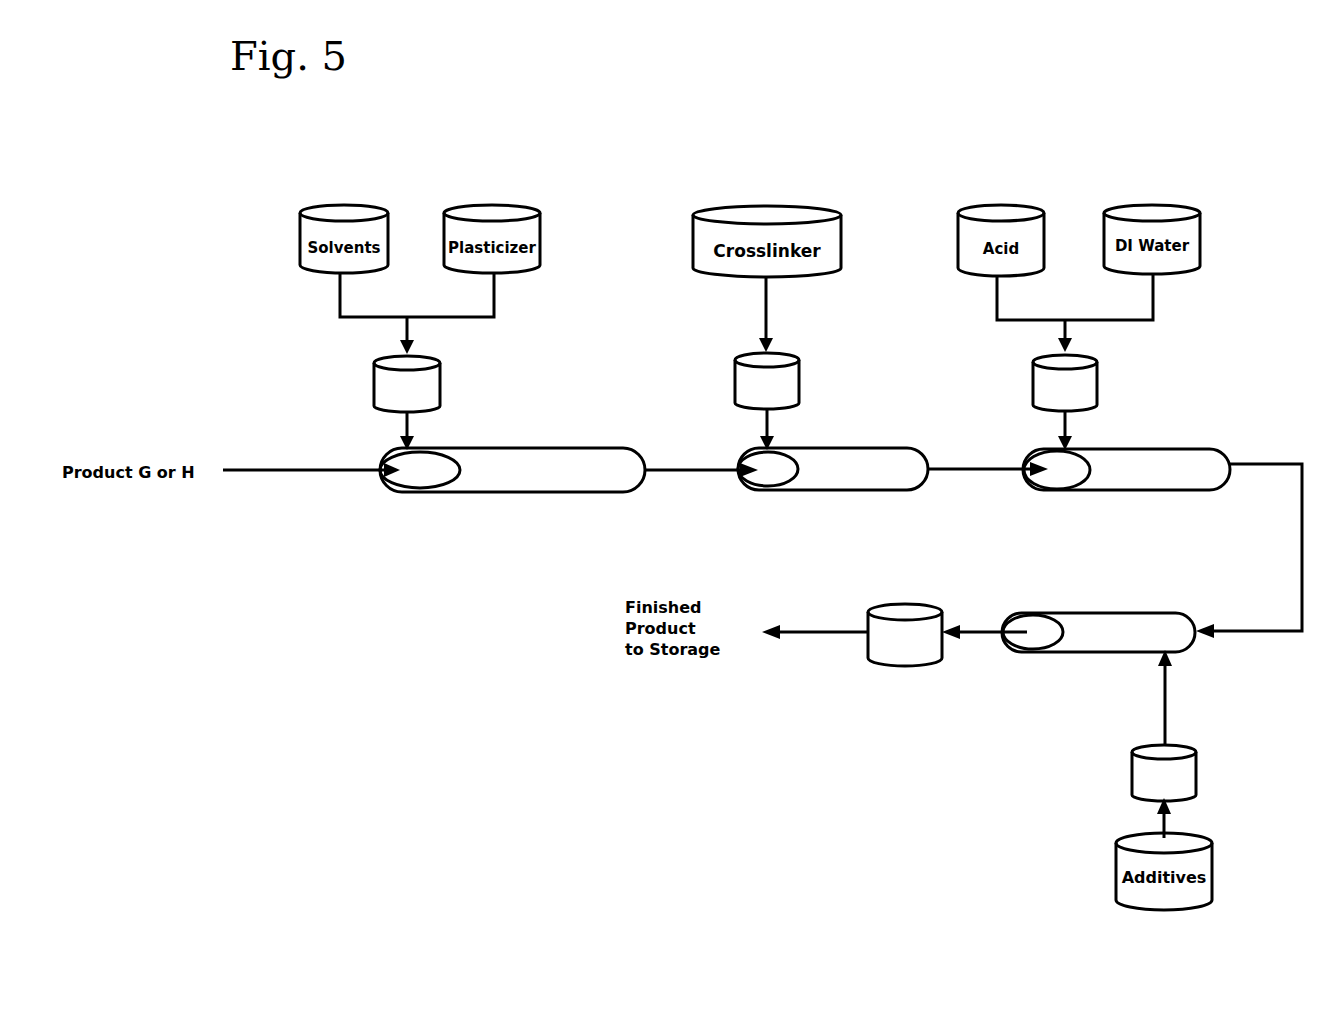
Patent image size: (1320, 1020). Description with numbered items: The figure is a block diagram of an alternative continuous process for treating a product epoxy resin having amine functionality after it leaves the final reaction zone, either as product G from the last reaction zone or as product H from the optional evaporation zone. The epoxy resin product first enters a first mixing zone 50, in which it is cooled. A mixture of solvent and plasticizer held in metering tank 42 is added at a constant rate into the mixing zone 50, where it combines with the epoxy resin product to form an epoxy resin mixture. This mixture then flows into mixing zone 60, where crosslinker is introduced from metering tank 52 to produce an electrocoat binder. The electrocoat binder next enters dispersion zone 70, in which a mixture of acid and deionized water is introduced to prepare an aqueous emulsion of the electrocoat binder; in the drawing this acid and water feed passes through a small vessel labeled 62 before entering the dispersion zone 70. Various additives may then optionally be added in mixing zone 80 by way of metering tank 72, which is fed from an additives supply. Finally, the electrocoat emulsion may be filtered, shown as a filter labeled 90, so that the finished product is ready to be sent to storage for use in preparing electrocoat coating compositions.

The metering tank 42 is at (440, 377).
The first mixing zone 50 is at (463, 490).
The metering tank 52 is at (800, 377).
The mixing zone 60 is at (840, 490).
The acid/DI water feed vessel 62 is at (1097, 380).
The dispersion zone 70 is at (1110, 486).
The metering tank 72 is at (1131, 788).
The mixing zone 80 is at (1046, 612).
The filter 90 is at (895, 665).